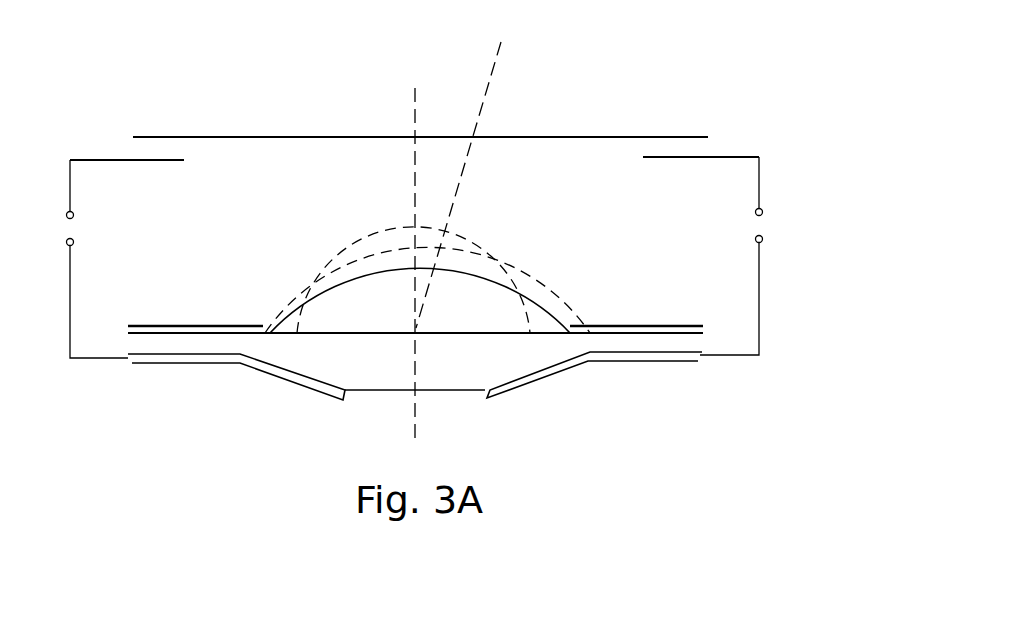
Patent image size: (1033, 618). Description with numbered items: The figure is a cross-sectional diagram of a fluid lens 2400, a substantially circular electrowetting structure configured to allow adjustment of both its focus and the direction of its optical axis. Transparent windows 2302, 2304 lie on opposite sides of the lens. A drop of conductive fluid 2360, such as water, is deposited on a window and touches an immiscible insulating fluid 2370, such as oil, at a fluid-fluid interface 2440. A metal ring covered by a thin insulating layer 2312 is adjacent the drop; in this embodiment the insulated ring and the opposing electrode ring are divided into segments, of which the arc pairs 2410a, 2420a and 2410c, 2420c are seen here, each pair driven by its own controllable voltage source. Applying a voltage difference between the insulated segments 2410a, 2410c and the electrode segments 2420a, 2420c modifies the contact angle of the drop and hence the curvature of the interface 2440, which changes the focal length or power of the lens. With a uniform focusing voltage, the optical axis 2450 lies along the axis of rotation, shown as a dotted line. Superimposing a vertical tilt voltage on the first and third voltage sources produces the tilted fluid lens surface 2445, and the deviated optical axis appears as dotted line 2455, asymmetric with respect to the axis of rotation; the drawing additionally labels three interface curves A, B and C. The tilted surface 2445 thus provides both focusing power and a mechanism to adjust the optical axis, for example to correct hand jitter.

The fluid lens 2400 is at (680, 52).
The transparent window 2304 is at (218, 137).
The electrode segment 2420c is at (93, 158).
The electrode segment 2420a is at (722, 155).
The conductive fluid 2360 is at (588, 150).
The deviated optical axis 2455 is at (495, 65).
The optical axis 2450 is at (413, 413).
The fluid-fluid interface 2440 is at (394, 288).
The lens surface profile A is at (540, 295).
The lens surface profile B is at (480, 248).
The lens surface profile C is at (530, 257).
The fluid lens surface 2445 is at (470, 270).
The immiscible fluid 2370 is at (398, 325).
The insulating layer 2312 is at (148, 343).
The insulated electrode segment 2410c is at (283, 372).
The insulated electrode segment 2410a is at (538, 380).
The transparent window 2302 is at (445, 392).